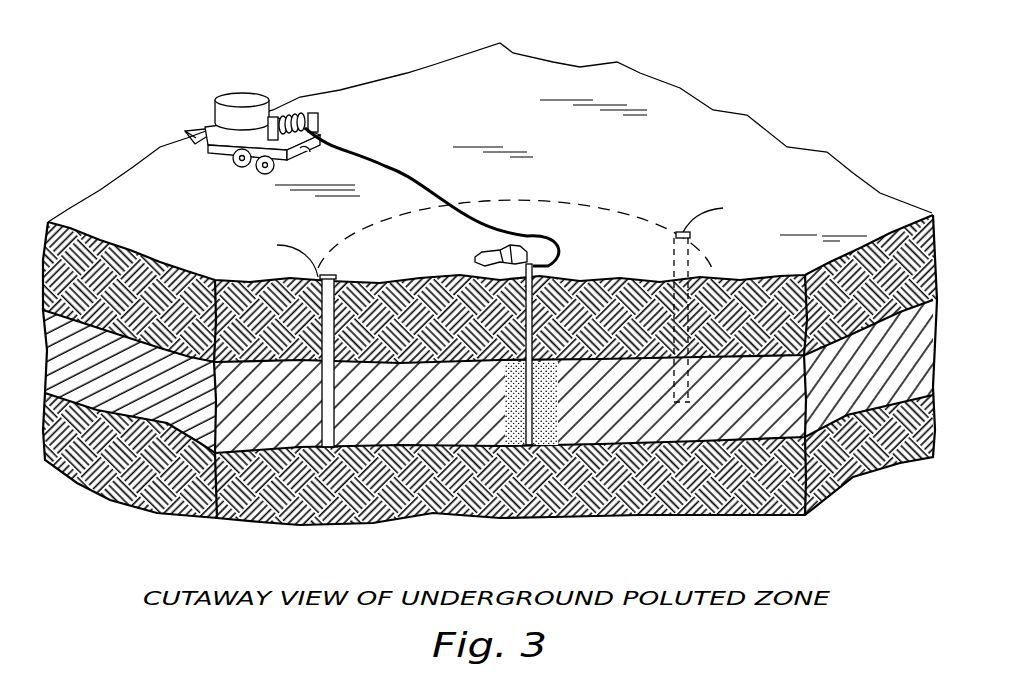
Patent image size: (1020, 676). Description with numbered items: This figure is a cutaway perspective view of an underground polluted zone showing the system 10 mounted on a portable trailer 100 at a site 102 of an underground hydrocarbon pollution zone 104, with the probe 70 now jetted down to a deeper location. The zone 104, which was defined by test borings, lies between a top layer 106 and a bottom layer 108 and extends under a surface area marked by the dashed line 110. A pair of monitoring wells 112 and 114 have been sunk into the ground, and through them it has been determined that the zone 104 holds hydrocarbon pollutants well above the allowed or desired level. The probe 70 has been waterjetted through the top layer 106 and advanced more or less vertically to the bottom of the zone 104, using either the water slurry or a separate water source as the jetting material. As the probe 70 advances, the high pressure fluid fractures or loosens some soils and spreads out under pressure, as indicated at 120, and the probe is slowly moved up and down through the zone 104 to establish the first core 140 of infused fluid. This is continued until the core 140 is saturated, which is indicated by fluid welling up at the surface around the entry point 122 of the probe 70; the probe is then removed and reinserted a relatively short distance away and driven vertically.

The system 10 is at (305, 86).
The probe 70 is at (527, 317).
The portable trailer 100 is at (213, 138).
The site 102 is at (722, 147).
The underground hydrocarbon pollution zone 104 is at (622, 420).
The top layer 106 is at (145, 296).
The bottom layer 108 is at (133, 467).
The dashed line 110 is at (647, 200).
The monitoring well 112 is at (340, 327).
The monitoring well 114 is at (692, 233).
The spreading high pressure fluid 120 is at (558, 437).
The entry point 122 is at (565, 256).
The first core 140 is at (495, 445).